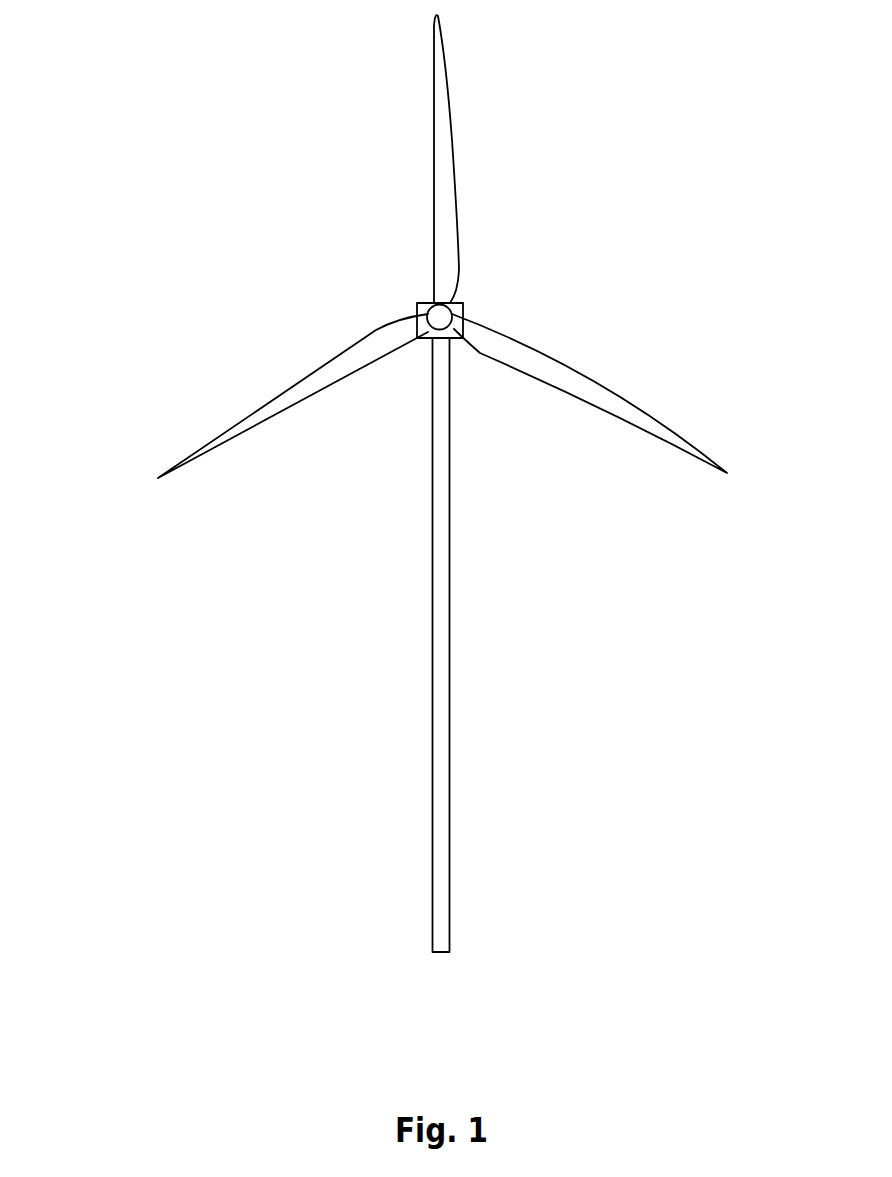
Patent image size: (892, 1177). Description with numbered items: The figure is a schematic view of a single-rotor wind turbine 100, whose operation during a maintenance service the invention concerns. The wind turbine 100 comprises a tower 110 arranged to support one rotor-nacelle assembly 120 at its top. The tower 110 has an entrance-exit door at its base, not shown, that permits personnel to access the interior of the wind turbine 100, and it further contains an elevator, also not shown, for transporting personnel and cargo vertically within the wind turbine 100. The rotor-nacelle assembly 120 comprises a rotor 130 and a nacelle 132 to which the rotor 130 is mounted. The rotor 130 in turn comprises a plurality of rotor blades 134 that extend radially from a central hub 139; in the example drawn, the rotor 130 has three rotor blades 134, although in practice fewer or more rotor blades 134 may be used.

The single-rotor wind turbine 100 is at (384, 483).
The tower 110 is at (438, 663).
The rotor-nacelle assembly 120 is at (384, 246).
The rotor 130 is at (408, 246).
The nacelle 132 is at (478, 305).
The rotor blade 134 is at (445, 230).
The central hub 139 is at (437, 320).